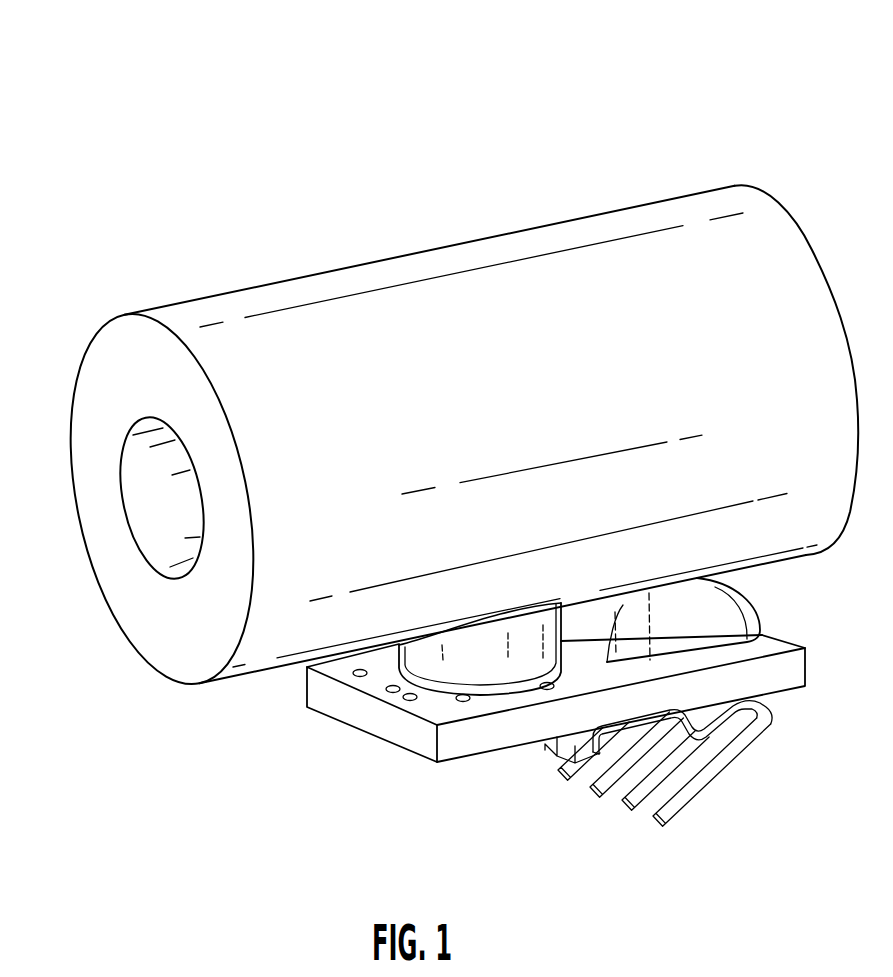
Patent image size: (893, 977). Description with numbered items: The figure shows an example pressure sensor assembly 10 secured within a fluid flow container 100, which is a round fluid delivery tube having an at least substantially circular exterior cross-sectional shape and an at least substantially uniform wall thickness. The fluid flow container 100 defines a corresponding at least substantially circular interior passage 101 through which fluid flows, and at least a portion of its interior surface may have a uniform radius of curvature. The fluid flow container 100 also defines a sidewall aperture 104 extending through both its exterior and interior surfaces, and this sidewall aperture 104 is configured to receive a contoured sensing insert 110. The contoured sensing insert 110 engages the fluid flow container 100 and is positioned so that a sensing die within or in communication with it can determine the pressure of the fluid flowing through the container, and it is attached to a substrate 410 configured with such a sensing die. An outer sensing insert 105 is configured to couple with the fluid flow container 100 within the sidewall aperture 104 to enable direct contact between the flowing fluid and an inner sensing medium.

The pressure sensor assembly 10 is at (430, 43).
The fluid flow container 100 is at (470, 258).
The interior passage 101 is at (177, 510).
The sidewall aperture 104 is at (567, 613).
The outer sensing insert 105 is at (503, 646).
The contoured sensing insert 110 is at (433, 668).
The substrate 410 is at (468, 743).